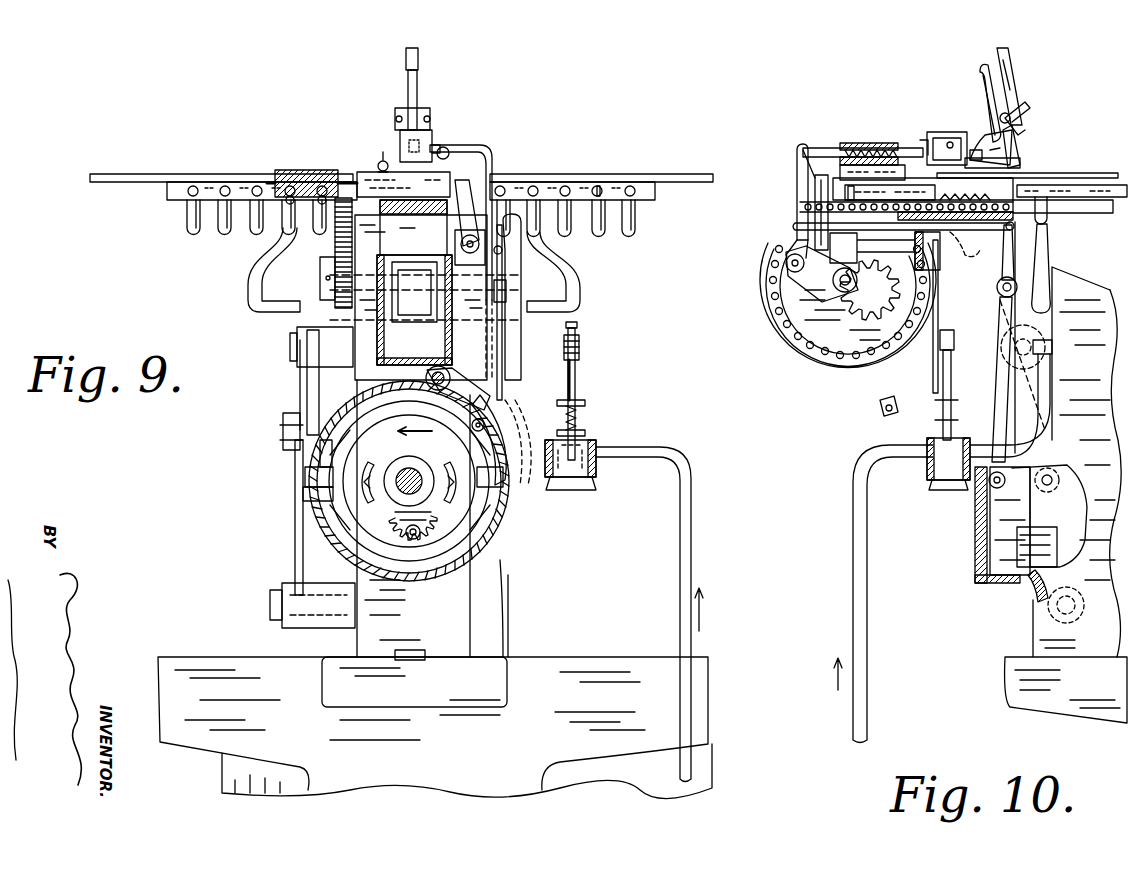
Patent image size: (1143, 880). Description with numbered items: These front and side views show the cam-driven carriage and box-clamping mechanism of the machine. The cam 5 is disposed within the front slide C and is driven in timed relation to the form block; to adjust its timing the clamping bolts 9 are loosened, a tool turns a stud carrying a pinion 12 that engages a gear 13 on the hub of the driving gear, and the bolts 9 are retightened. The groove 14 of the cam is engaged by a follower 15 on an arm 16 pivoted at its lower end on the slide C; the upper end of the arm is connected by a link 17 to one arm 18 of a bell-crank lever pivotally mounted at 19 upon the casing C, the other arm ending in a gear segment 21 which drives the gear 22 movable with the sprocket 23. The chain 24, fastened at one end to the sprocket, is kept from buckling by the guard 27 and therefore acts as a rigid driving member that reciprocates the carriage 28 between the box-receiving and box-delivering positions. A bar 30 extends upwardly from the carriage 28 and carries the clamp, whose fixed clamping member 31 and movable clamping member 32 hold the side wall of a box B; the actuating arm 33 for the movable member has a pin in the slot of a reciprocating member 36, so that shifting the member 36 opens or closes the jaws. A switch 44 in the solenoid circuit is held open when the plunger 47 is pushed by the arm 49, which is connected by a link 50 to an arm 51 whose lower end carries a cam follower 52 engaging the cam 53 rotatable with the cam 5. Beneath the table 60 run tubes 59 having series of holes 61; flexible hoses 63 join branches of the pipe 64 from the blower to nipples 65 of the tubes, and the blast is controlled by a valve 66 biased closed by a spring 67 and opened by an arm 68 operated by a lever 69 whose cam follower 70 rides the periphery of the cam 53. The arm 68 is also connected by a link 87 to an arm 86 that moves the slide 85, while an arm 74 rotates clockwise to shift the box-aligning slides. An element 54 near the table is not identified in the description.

In FIG. 10, the cam 5 is at (1035, 585).
In FIG. 9, the clamping bolts 9 is at (377, 477).
In FIG. 9, the pinion 12 is at (416, 539).
In FIG. 9, the gear 13 is at (393, 517).
In FIG. 9, the groove 14 is at (318, 462).
In FIG. 9, the follower 15 is at (318, 500).
In FIG. 9, the arm 16 is at (297, 542).
In FIG. 10, the arm 16 is at (1075, 565).
In FIG. 9, the link 17 is at (283, 428).
In FIG. 9, the bell-crank arm 18 is at (307, 393).
In FIG. 9, the pivot 19 is at (293, 340).
In FIG. 9, the gear segment 21 is at (335, 236).
In FIG. 10, the gear segment 21 is at (875, 318).
In FIG. 9, the gear 22 is at (320, 262).
In FIG. 10, the gear 22 is at (845, 295).
In FIG. 10, the sprocket 23 is at (785, 288).
In FIG. 9, the chain 24 is at (437, 327).
In FIG. 10, the chain 24 is at (832, 355).
In FIG. 10, the guard 27 is at (842, 364).
In FIG. 10, the carriage 28 is at (905, 143).
In FIG. 9, the bar 30 is at (418, 56).
In FIG. 10, the bar 30 is at (1005, 62).
In FIG. 10, the fixed clamping member 31 is at (1020, 135).
In FIG. 9, the movable clamping member 32 is at (430, 116).
In FIG. 10, the movable clamping member 32 is at (1012, 110).
In FIG. 10, the actuating arm 33 is at (990, 130).
In FIG. 9, the reciprocating member 36 is at (417, 92).
In FIG. 10, the reciprocating member 36 is at (980, 78).
In FIG. 10, the switch 44 is at (920, 140).
In FIG. 10, the plunger 47 is at (905, 148).
In FIG. 9, the arm 49 is at (492, 150).
In FIG. 10, the arm 49 is at (797, 180).
In FIG. 10, the link 50 is at (975, 232).
In FIG. 10, the arm 51 is at (995, 290).
In FIG. 9, the cam follower 52 is at (507, 480).
In FIG. 10, the cam follower 52 is at (985, 490).
In FIG. 10, the cam 53 is at (1000, 545).
In FIG. 10, the plate 54 is at (1050, 195).
In FIG. 9, the tubes 59 is at (190, 190).
In FIG. 10, the tubes 59 is at (1125, 185).
In FIG. 9, the table 60 is at (205, 175).
In FIG. 10, the table 60 is at (1095, 175).
In FIG. 9, the holes 61 is at (598, 182).
In FIG. 9, the flexible hoses 63 is at (248, 283).
In FIG. 10, the flexible hoses 63 is at (1046, 250).
In FIG. 9, the pipe 64 is at (618, 447).
In FIG. 10, the pipe 64 is at (860, 600).
In FIG. 9, the nipples 65 is at (186, 220).
In FIG. 10, the nipples 65 is at (1047, 213).
In FIG. 9, the valve 66 is at (577, 492).
In FIG. 10, the valve 66 is at (933, 490).
In FIG. 9, the spring 67 is at (585, 412).
In FIG. 9, the arm 68 is at (580, 350).
In FIG. 9, the lever 69 is at (470, 397).
In FIG. 9, the cam follower 70 is at (485, 424).
In FIG. 9, the arm 74 is at (381, 160).
In FIG. 9, the slide 85 is at (357, 180).
In FIG. 9, the arm 86 is at (478, 190).
In FIG. 10, the arm 86 is at (815, 200).
In FIG. 9, the link 87 is at (505, 322).
In FIG. 10, the link 87 is at (933, 350).
In FIG. 10, the box B is at (1025, 150).
In FIG. 9, the front slide C is at (508, 630).
In FIG. 10, the front slide C is at (1033, 638).